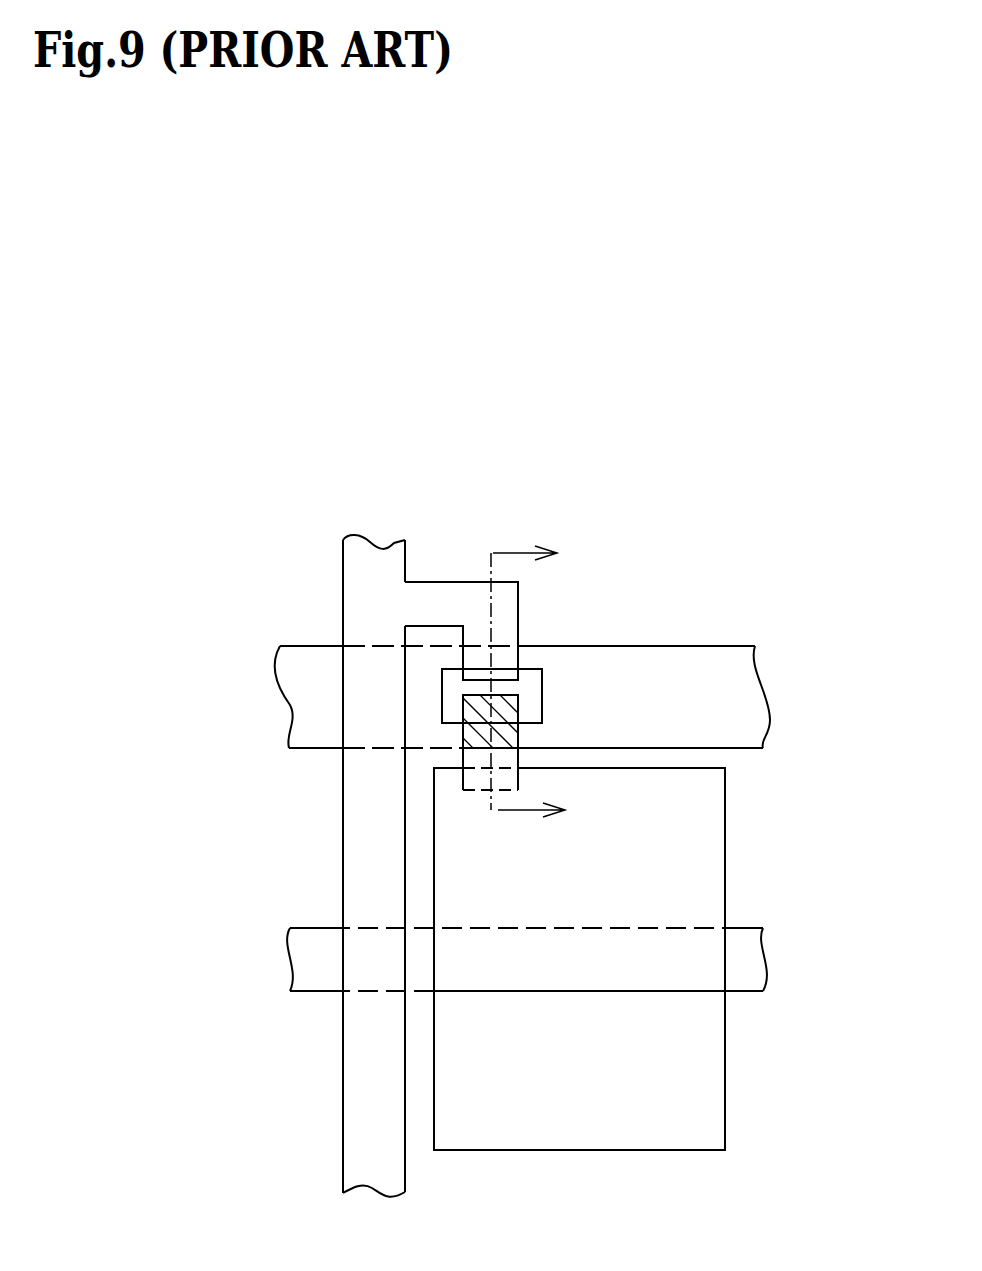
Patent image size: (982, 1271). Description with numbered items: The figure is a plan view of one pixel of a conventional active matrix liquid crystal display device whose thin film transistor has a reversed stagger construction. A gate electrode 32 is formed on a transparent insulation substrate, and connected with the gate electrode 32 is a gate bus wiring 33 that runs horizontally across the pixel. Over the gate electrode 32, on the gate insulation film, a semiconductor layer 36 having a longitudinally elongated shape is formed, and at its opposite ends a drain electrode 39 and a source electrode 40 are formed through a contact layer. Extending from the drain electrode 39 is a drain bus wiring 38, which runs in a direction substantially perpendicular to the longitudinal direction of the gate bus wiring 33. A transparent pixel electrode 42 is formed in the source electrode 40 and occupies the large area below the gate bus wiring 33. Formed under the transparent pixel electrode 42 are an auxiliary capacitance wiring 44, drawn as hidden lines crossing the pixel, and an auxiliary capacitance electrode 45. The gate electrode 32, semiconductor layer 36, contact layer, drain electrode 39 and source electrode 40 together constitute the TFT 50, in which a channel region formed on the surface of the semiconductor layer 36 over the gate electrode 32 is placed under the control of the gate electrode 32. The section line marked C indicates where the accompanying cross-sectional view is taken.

The gate electrode 32 is at (597, 664).
The gate bus wiring 33 is at (750, 712).
The semiconductor layer 36 is at (537, 694).
The drain bus wiring 38 is at (362, 1025).
The drain electrode 39 is at (477, 632).
The source electrode 40 is at (507, 755).
The transparent pixel electrode 42 is at (703, 878).
The auxiliary capacitance wiring 44 is at (740, 962).
The auxiliary capacitance electrode 45 is at (610, 957).
The TFT 50 is at (563, 628).